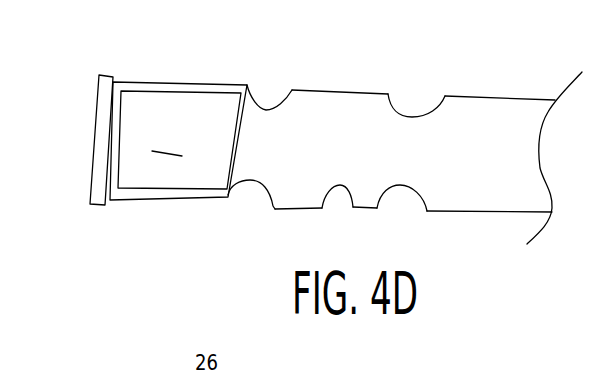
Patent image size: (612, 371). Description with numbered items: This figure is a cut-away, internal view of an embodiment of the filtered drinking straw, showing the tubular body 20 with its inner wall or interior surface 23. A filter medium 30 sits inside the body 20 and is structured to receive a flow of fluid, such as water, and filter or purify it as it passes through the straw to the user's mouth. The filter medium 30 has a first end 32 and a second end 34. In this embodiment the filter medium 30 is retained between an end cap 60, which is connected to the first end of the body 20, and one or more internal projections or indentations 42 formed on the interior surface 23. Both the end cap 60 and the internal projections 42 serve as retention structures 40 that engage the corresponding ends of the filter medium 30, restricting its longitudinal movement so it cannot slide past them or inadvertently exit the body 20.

The body 20 is at (497, 93).
The inner wall or interior surface 23 is at (343, 92).
The filter medium 30 is at (165, 135).
The first end 32 is at (123, 115).
The second end 34 is at (240, 143).
The retention structure 40 is at (262, 103).
The internal projection or indentation 42 is at (250, 181).
The end cap 60 is at (104, 205).